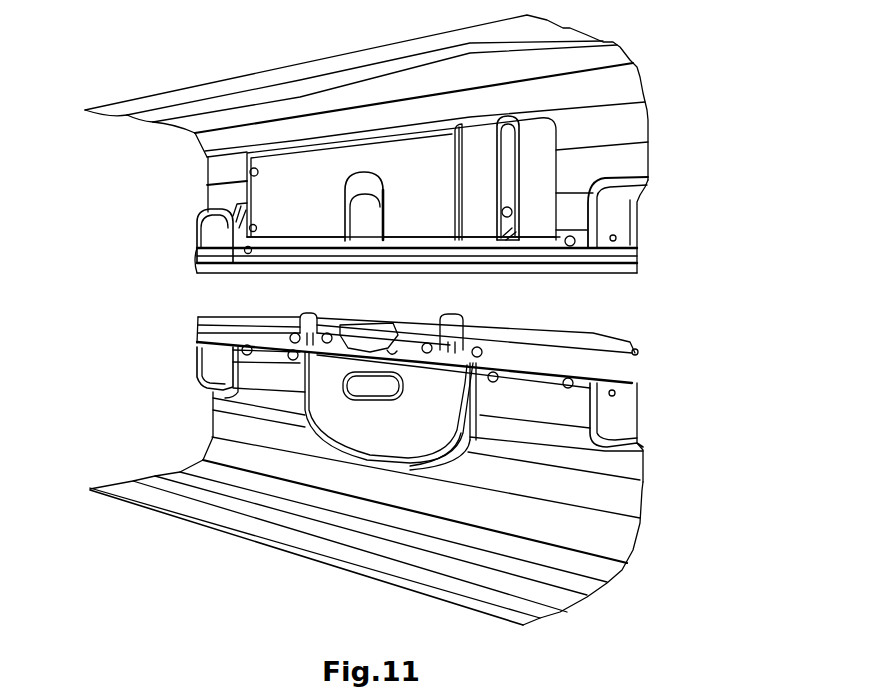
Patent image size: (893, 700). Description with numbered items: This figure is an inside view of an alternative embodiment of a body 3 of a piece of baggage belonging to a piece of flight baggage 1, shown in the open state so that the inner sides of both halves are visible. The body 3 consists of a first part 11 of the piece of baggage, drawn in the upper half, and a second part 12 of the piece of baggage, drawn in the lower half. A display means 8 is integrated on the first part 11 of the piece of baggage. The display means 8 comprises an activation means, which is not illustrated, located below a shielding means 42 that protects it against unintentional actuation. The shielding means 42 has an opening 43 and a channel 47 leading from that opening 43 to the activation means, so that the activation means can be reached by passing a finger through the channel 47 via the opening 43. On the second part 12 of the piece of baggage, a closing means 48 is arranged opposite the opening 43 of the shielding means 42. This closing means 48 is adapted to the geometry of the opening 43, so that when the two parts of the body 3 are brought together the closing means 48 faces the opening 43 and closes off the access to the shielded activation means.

The piece of flight baggage 1 is at (107, 44).
The body of the piece of baggage 3 is at (655, 56).
The display means 8 is at (423, 162).
The first part of the piece of baggage 11 is at (618, 159).
The second part of the piece of baggage 12 is at (617, 495).
The shielding means 42 is at (380, 250).
The opening 43 is at (348, 282).
The channel 47 is at (330, 220).
The closing means 48 is at (377, 338).